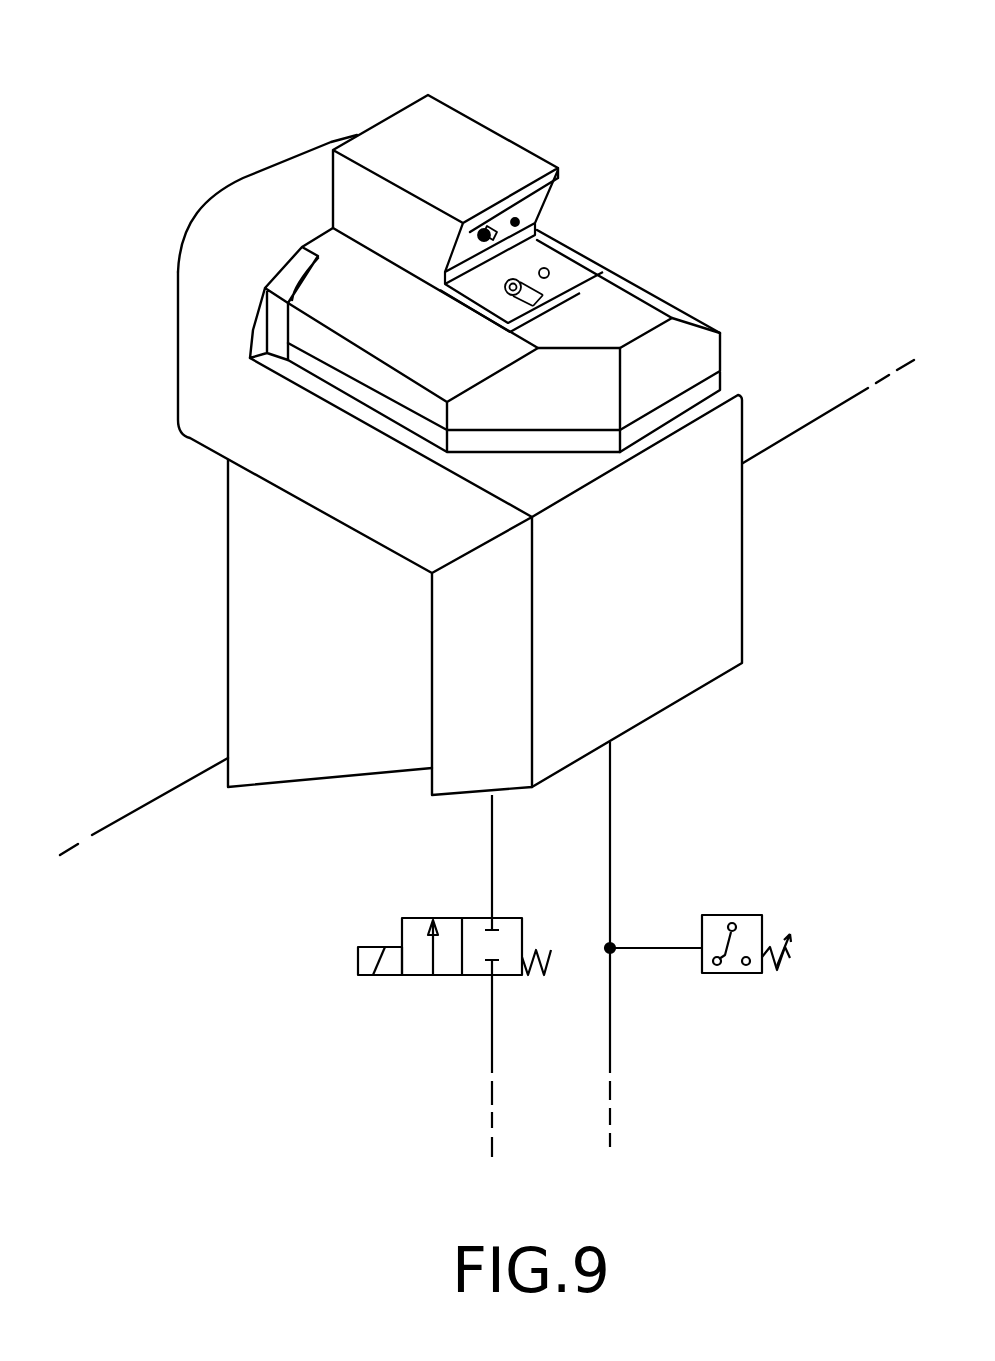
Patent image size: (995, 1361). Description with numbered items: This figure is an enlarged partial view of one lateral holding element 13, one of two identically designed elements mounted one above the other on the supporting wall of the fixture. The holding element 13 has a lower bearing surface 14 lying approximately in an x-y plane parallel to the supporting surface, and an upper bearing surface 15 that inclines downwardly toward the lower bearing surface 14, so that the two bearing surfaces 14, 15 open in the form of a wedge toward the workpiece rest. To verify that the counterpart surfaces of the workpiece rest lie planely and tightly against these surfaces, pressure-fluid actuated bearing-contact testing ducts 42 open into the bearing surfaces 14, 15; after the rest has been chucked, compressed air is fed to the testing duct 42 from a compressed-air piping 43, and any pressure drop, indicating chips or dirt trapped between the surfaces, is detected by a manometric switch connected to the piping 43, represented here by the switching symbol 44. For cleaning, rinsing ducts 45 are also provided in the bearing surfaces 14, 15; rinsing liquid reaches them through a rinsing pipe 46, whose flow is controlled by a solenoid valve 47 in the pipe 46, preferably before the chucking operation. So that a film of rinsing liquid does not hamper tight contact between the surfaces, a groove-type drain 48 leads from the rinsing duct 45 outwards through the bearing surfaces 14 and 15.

The lateral holding element 13 is at (692, 312).
The lower bearing surface 14 is at (455, 296).
The upper bearing surface 15 is at (537, 205).
The bearing-contact testing duct 42 is at (517, 219).
The compressed-air piping 43 is at (610, 1047).
The switch valve 44 is at (750, 915).
The rinsing duct 45 is at (478, 231).
The rinsing pipe 46 is at (492, 852).
The solenoid valve 47 is at (461, 977).
The groove-type drain 48 is at (492, 228).